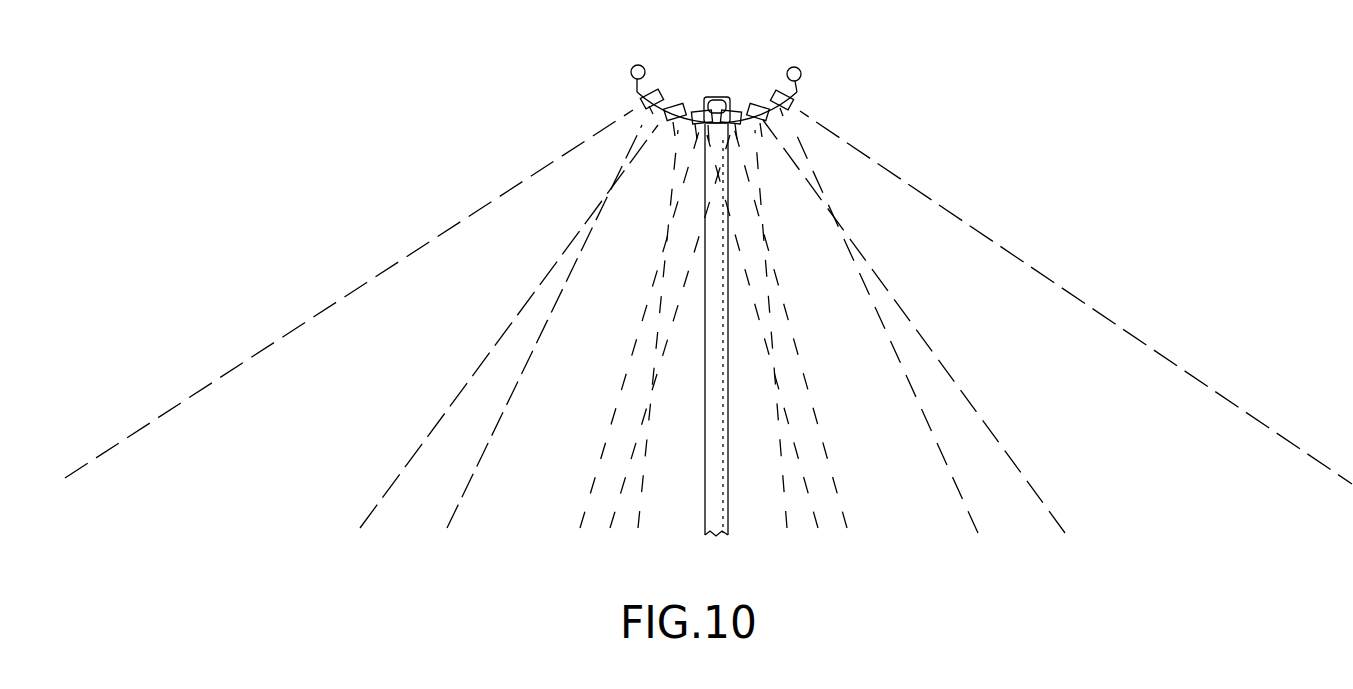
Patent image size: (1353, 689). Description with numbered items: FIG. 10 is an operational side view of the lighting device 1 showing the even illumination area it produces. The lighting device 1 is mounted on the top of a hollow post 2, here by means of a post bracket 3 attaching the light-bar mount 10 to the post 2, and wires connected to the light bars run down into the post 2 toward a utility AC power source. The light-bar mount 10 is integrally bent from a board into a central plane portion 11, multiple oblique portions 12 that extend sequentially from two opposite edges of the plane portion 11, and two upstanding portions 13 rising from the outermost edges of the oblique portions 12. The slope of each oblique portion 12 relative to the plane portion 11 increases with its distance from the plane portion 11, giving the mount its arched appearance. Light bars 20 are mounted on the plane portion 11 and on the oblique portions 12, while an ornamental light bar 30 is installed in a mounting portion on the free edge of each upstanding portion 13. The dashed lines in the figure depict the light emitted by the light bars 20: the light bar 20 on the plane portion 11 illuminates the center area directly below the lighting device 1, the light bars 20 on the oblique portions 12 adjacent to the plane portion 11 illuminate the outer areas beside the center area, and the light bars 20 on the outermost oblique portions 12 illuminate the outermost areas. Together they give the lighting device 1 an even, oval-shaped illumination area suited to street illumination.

The lighting device 1 is at (768, 74).
The post 2 is at (702, 477).
The post bracket 3 is at (706, 90).
The light-bar mount 10 is at (756, 126).
The plane portion 11 is at (710, 126).
The oblique portion 12 is at (778, 112).
The upstanding portion 13 is at (799, 90).
The light bar 20 is at (758, 102).
The ornamental light bar 30 is at (802, 72).